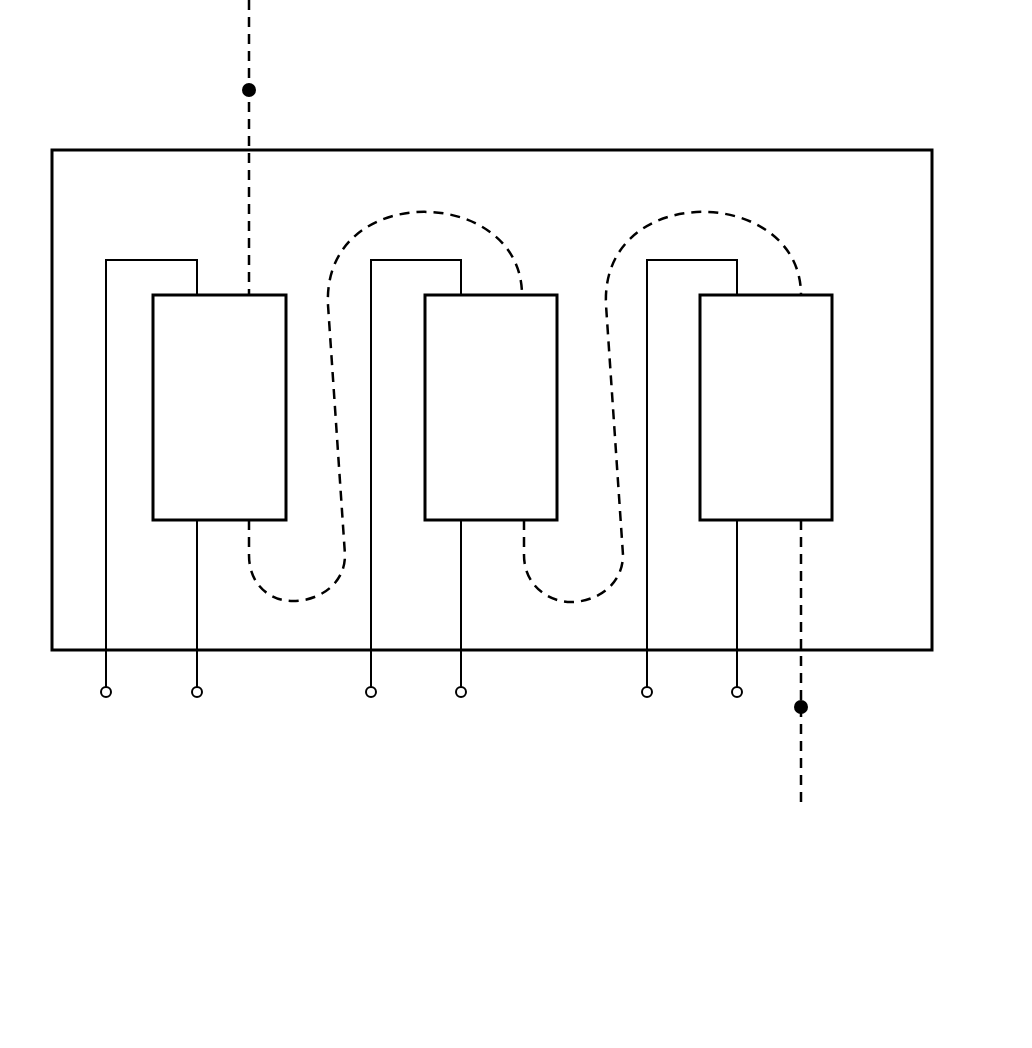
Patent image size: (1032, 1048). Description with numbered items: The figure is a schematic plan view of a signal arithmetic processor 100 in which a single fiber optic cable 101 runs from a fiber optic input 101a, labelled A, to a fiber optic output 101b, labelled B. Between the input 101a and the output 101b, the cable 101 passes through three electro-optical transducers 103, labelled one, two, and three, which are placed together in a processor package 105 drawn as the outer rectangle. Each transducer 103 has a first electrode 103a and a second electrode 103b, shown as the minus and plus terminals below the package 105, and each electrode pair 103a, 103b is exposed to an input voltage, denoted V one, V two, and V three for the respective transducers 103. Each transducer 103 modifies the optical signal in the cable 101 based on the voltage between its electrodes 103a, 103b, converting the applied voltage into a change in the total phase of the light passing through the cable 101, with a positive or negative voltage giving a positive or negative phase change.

The signal arithmetic processor 100 is at (537, 168).
The processor package 105 is at (865, 150).
The fiber optic cable 101 is at (524, 415).
The fiber optic input 101a is at (249, 48).
The fiber optic output 101b is at (803, 785).
The electro-optical transducer 103 is at (210, 295).
The first electrode 103a is at (203, 694).
The second electrode 103b is at (103, 695).